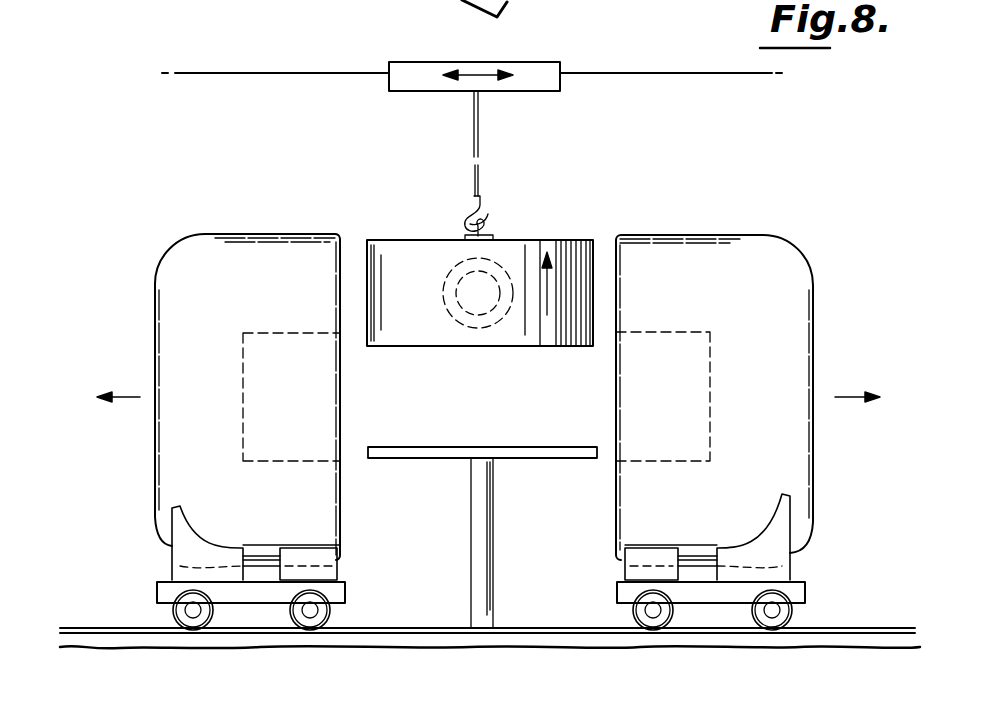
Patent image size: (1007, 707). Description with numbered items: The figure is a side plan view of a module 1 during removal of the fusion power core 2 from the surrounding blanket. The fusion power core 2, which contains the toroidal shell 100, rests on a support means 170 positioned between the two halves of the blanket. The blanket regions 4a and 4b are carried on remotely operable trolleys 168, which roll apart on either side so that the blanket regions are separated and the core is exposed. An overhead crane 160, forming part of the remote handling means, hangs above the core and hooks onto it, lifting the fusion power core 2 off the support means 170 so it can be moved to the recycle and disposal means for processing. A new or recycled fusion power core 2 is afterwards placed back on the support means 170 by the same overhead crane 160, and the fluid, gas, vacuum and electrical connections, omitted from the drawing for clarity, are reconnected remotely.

The module 1 is at (600, 192).
The fusion power core 2 is at (432, 240).
The toroidal shell 100 is at (442, 297).
The overhead crane 160 is at (388, 85).
The support means 170 is at (484, 491).
The trolley 168 is at (158, 591).
The blanket region 4a is at (247, 407).
The blanket region 4b is at (714, 407).